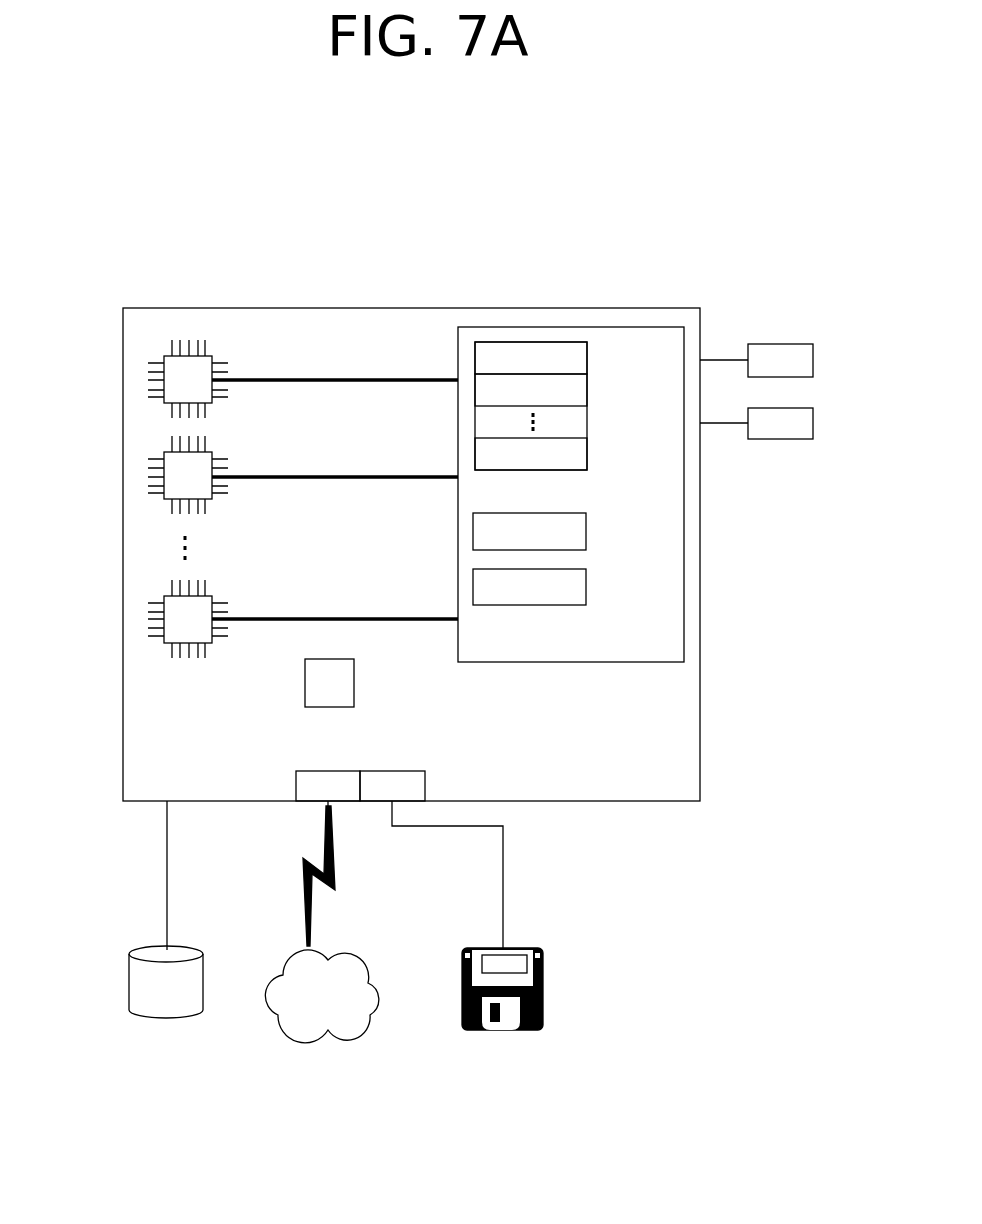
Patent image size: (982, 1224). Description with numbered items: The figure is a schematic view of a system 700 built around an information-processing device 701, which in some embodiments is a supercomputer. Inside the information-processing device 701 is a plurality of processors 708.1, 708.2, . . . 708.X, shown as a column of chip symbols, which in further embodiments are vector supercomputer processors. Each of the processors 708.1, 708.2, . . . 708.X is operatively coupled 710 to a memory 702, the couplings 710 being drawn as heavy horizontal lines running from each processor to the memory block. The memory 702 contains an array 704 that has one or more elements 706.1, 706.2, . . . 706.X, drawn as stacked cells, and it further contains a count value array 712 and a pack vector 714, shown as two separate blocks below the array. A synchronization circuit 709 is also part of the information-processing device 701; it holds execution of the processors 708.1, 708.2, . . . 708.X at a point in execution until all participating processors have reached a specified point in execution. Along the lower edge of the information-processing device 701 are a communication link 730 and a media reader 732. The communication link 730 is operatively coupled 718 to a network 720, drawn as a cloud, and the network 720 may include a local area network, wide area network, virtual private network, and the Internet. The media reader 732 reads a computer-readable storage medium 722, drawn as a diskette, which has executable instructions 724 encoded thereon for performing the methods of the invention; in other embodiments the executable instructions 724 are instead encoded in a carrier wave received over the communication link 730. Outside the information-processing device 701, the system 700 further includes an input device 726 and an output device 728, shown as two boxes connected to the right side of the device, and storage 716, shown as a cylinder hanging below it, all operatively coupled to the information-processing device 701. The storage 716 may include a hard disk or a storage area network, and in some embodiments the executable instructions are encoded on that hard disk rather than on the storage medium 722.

The system 700 is at (398, 198).
The information-processing device 701 is at (190, 308).
The memory 702 is at (500, 327).
The array 704 is at (507, 342).
The element 706.1 is at (573, 357).
The element 706.2 is at (573, 388).
The element 706.X is at (573, 452).
The processor 708.1 is at (164, 357).
The processor 708.2 is at (164, 453).
The processor 708.X is at (164, 597).
The synchronization circuit 709 is at (305, 690).
The operative coupling 710 is at (268, 380).
The count value array 712 is at (586, 516).
The pack vector 714 is at (586, 572).
The storage 716 is at (165, 1014).
The operative coupling 718 is at (334, 888).
The network 720 is at (345, 947).
The computer-readable storage medium 722 is at (532, 947).
The executable instructions 724 is at (510, 955).
The input device 726 is at (782, 344).
The output device 728 is at (783, 408).
The communication link 730 is at (330, 771).
The media reader 732 is at (392, 771).